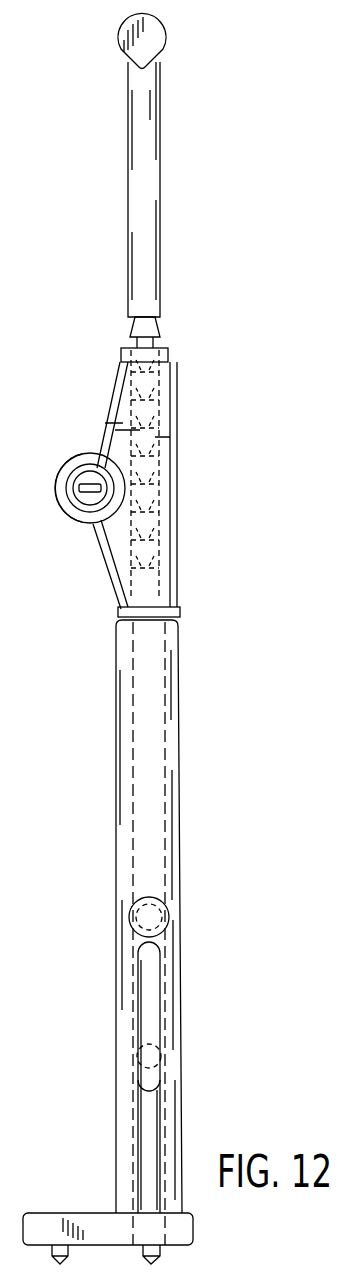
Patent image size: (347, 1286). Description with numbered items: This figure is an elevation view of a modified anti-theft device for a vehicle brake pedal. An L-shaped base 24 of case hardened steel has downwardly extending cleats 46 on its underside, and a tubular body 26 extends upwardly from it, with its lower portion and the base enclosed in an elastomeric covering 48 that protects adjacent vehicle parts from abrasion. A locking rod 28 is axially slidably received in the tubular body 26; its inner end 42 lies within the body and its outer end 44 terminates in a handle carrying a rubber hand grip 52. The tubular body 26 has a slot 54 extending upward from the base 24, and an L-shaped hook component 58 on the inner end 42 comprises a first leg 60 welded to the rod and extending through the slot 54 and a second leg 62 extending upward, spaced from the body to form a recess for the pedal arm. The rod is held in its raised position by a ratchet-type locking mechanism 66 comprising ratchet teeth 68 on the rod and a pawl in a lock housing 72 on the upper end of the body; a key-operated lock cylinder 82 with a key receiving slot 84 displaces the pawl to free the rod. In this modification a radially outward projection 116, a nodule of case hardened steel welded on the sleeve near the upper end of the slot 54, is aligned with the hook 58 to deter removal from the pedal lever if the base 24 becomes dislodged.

The base 24 is at (134, 1207).
The tubular body 26 is at (156, 932).
The locking rod 28 is at (148, 165).
The inner end 42 is at (157, 841).
The outer end 44 is at (152, 177).
The cleats 46 is at (160, 1253).
The covering 48 is at (179, 672).
The hand grip 52 is at (162, 37).
The slot 54 is at (157, 1135).
The hook component 58 is at (141, 996).
The first leg 60 is at (153, 1067).
The second leg 62 is at (144, 1077).
The locking mechanism 66 is at (129, 479).
The ratchet teeth 68 is at (161, 333).
The lock housing 72 is at (181, 462).
The lock cylinder 82 is at (66, 500).
The key receiving slot 84 is at (88, 493).
The projection 116 is at (156, 914).